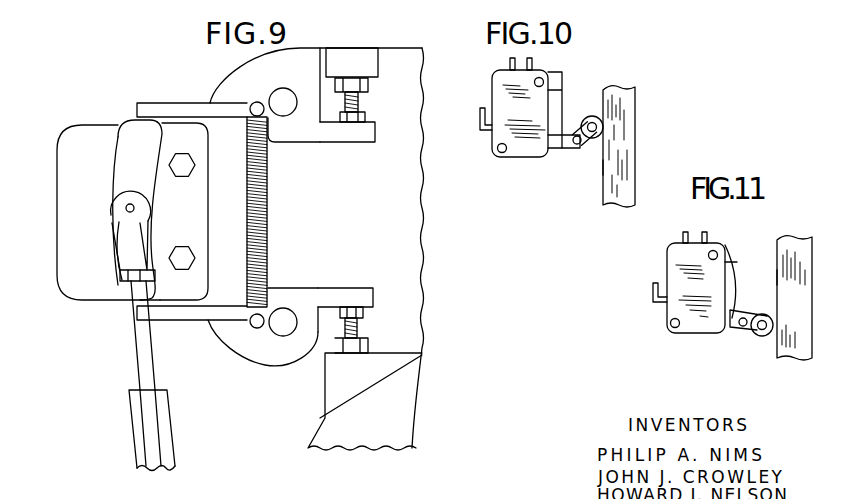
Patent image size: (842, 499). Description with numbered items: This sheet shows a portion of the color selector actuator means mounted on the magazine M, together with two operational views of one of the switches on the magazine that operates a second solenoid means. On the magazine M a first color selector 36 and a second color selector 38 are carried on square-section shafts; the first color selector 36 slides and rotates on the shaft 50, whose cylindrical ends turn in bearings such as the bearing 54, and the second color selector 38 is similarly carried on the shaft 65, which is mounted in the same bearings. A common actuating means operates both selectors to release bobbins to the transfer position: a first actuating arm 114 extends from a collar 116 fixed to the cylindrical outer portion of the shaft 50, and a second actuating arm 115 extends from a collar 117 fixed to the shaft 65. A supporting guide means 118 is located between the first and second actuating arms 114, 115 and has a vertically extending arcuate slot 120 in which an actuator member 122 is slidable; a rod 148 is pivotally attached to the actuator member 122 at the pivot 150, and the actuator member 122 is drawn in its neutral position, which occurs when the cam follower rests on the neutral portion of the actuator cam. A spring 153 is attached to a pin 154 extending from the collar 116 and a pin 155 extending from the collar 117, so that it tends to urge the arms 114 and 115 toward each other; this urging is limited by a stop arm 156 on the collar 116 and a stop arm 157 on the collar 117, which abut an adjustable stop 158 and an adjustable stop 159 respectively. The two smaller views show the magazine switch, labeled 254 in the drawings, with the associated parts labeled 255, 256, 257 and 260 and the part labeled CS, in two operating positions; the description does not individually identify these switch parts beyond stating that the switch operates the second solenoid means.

In FIG. 9, the first color selector 36 is at (230, 74).
In FIG. 9, the second color selector 38 is at (272, 392).
In FIG. 9, the shaft 50 is at (282, 330).
In FIG. 9, the bearing 54 is at (312, 365).
In FIG. 9, the shaft 65 is at (282, 93).
In FIG. 9, the magazine M is at (457, 258).
In FIG. 9, the first actuating arm 114 is at (188, 313).
In FIG. 9, the second actuating arm 115 is at (187, 112).
In FIG. 9, the collar 116 is at (303, 295).
In FIG. 9, the collar 117 is at (302, 130).
In FIG. 9, the supporting guide means 118 is at (73, 240).
In FIG. 9, the arcuate slot 120 is at (106, 264).
In FIG. 9, the actuator member 122 is at (142, 132).
In FIG. 9, the rod 148 is at (142, 305).
In FIG. 9, the pivot 150 is at (126, 208).
In FIG. 9, the spring 153 is at (268, 218).
In FIG. 9, the pin 154 is at (251, 325).
In FIG. 9, the pin 155 is at (251, 105).
In FIG. 9, the stop arm 156 is at (360, 293).
In FIG. 9, the stop arm 157 is at (367, 135).
In FIG. 9, the adjustable stop 158 is at (366, 343).
In FIG. 9, the adjustable stop 159 is at (370, 87).
In FIG. 10, the switch 254 is at (502, 82).
In FIG. 11, the switch 254 is at (682, 257).
In FIG. 10, the switch actuator plate 255 is at (562, 92).
In FIG. 11, the switch actuator plate 255 is at (735, 262).
In FIG. 10, the actuator arm 256 is at (571, 150).
In FIG. 11, the actuator arm 256 is at (740, 327).
In FIG. 10, the roller 257 is at (588, 118).
In FIG. 11, the roller 257 is at (763, 315).
In FIG. 10, the cam surface edge 260 is at (603, 167).
In FIG. 11, the cam surface edge 260 is at (777, 277).
In FIG. 10, the cam strip CS is at (622, 127).
In FIG. 11, the cam strip CS is at (797, 248).